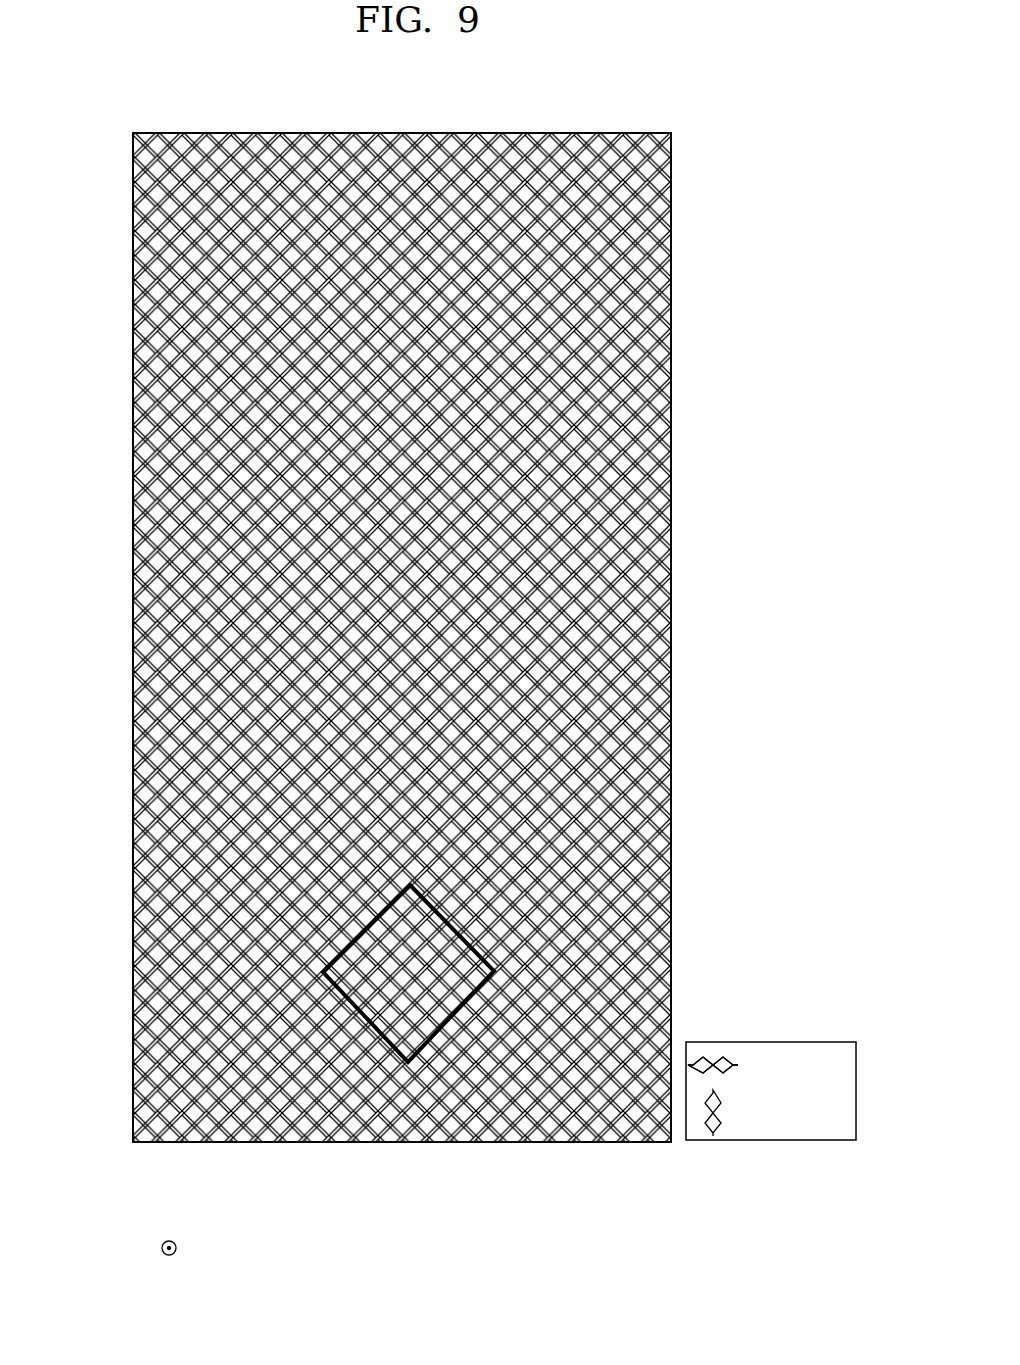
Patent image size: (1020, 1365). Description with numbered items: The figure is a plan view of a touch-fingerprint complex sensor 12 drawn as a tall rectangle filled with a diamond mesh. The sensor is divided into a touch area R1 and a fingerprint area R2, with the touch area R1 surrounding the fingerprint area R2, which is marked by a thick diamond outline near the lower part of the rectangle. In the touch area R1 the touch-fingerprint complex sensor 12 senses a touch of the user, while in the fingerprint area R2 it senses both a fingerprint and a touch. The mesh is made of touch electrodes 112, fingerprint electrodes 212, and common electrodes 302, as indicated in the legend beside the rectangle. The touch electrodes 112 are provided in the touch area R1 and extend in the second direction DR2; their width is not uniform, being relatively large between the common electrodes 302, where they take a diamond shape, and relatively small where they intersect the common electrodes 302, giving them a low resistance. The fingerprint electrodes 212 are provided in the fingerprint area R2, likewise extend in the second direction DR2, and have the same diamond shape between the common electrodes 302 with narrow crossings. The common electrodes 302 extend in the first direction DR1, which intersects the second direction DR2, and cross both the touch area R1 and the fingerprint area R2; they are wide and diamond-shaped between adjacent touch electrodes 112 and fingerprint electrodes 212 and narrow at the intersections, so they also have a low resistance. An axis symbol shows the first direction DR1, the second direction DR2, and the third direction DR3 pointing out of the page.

The touch-fingerprint complex sensor 12 is at (668, 100).
The touch area R1 is at (671, 893).
The fingerprint area R2 is at (363, 1015).
The touch electrodes 112 is at (766, 1067).
The fingerprint electrodes 212 is at (766, 1067).
The common electrodes 302 is at (751, 1113).
The first direction DR1 is at (169, 1241).
The second direction DR2 is at (162, 1248).
The third direction DR3 is at (208, 1249).